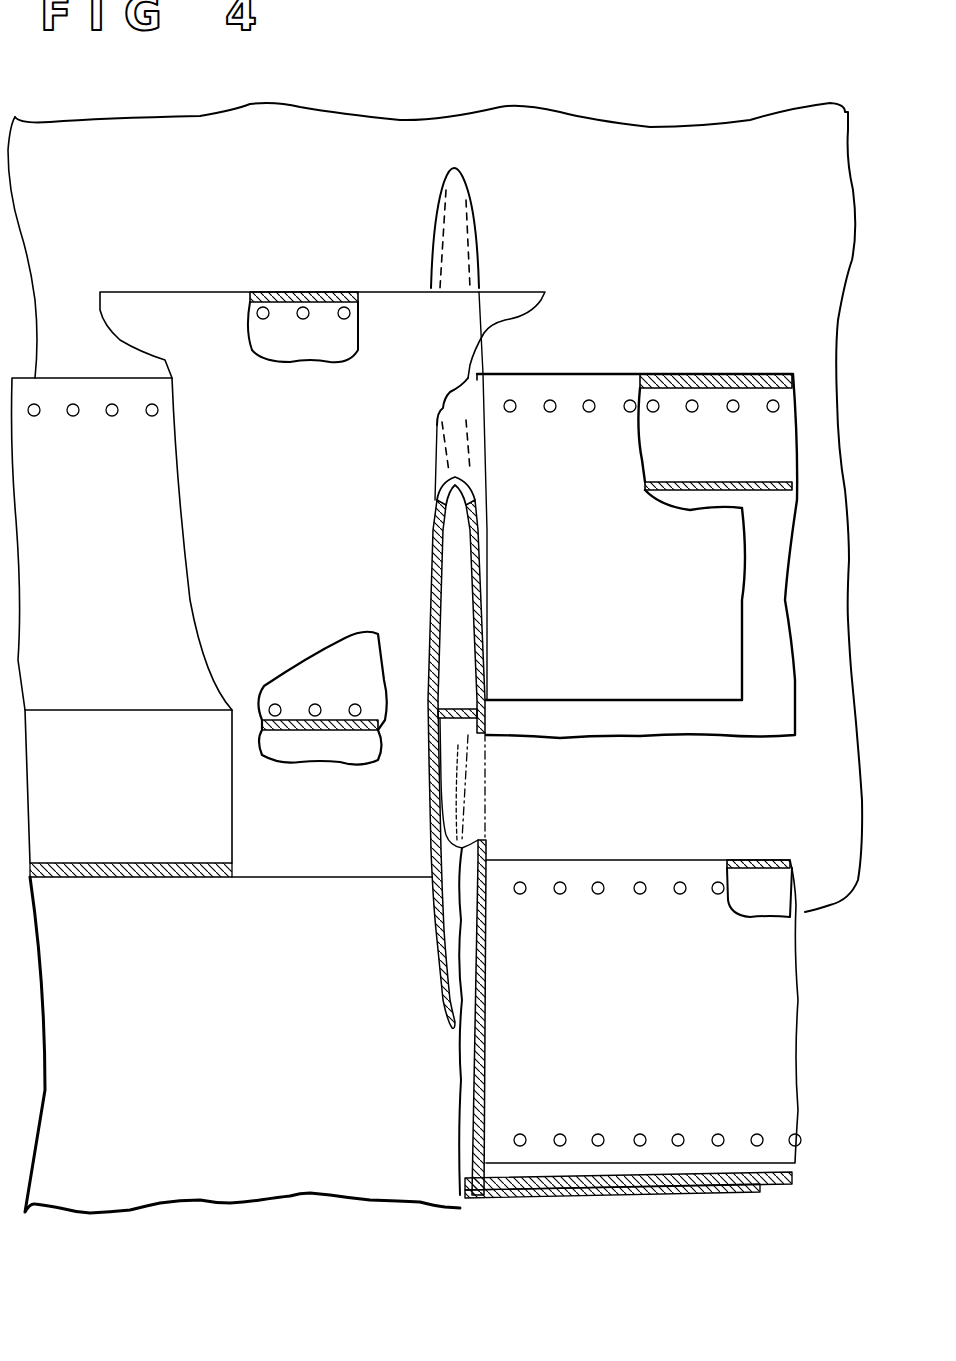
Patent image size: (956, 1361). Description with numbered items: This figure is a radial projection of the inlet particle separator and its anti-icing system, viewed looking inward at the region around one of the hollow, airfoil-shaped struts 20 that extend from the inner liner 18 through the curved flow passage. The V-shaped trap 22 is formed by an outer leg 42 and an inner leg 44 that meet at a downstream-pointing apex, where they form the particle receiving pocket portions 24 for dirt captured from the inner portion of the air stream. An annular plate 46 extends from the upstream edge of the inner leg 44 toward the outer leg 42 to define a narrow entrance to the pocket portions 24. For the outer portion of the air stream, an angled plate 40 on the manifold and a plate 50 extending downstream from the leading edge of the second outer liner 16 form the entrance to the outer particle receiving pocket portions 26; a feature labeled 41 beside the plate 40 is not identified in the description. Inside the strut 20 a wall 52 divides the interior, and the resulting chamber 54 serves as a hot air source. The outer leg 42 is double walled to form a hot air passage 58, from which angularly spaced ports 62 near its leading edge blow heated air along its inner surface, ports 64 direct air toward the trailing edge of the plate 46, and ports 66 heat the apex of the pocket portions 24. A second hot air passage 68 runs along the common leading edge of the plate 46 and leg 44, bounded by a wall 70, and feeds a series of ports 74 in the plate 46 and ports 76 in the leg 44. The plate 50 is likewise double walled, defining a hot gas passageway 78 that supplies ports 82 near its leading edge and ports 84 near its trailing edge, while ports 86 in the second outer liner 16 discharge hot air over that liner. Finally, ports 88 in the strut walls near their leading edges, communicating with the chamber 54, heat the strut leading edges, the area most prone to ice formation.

The second outer liner 16 is at (795, 912).
The inner liner 18 is at (672, 224).
The struts 20 is at (478, 262).
The V-shaped trap 22 is at (670, 308).
The particle receiving pocket portions 24 is at (190, 868).
The particle receiving pocket portions 26 is at (790, 1178).
The angled plate 40 is at (770, 1192).
The plate edge 41 is at (590, 1195).
The outer leg 42 is at (270, 492).
The inner leg 44 is at (102, 794).
The annular plate 46 is at (102, 562).
The plate 50 is at (607, 1029).
The wall 52 is at (466, 800).
The strut chamber 54 is at (450, 674).
The hot air passage 58 is at (330, 348).
The ports 62 is at (344, 316).
The ports 64 is at (316, 704).
The ports 66 is at (330, 748).
The hot air passage 68 is at (715, 432).
The wall 70 is at (740, 482).
The ports 74 is at (152, 412).
The ports 76 is at (692, 410).
The hot gas passageway 78 is at (759, 888).
The ports 82 is at (640, 893).
The ports 84 is at (598, 1136).
The ports 86 is at (740, 878).
The ports 88 is at (462, 252).